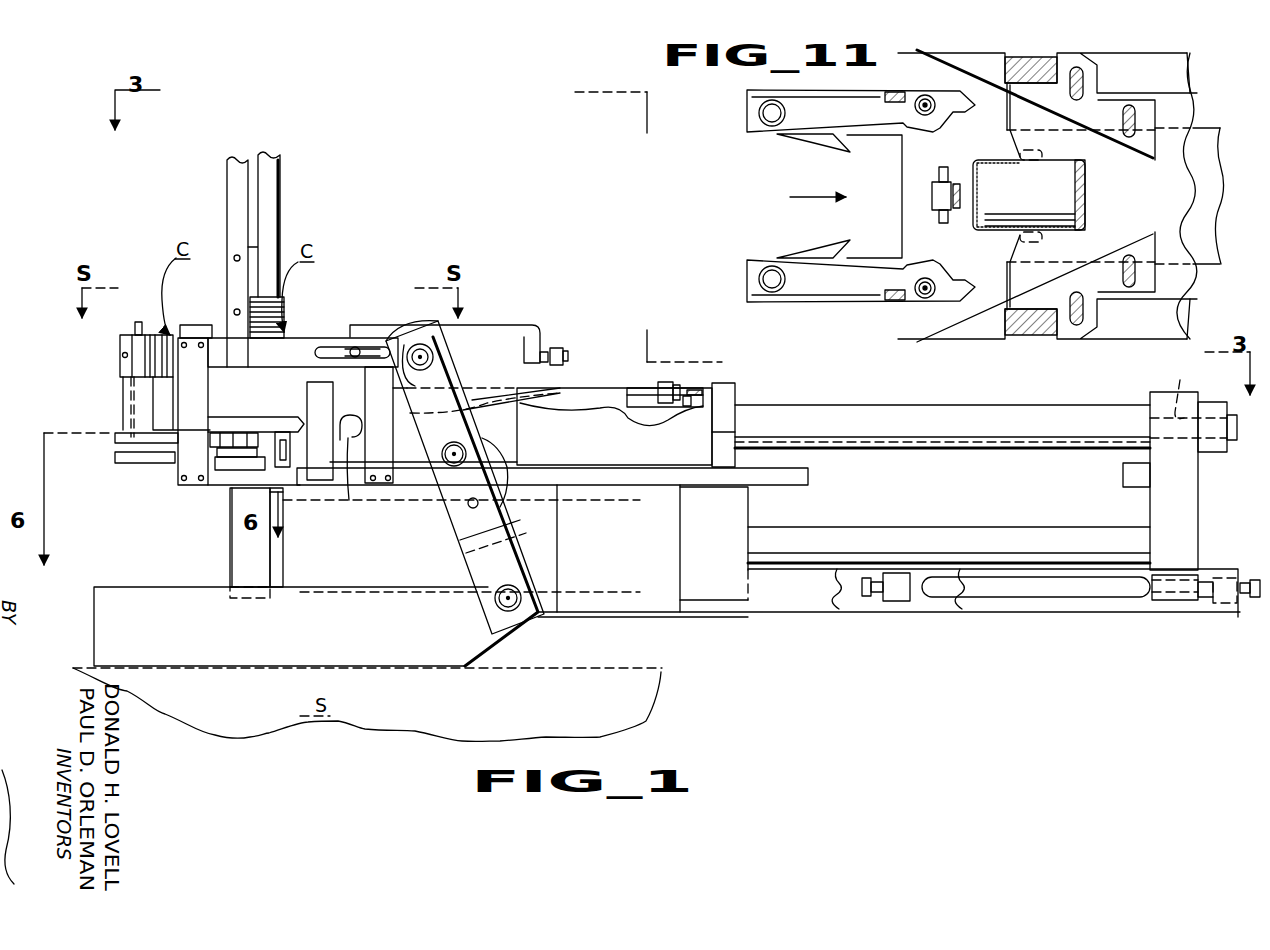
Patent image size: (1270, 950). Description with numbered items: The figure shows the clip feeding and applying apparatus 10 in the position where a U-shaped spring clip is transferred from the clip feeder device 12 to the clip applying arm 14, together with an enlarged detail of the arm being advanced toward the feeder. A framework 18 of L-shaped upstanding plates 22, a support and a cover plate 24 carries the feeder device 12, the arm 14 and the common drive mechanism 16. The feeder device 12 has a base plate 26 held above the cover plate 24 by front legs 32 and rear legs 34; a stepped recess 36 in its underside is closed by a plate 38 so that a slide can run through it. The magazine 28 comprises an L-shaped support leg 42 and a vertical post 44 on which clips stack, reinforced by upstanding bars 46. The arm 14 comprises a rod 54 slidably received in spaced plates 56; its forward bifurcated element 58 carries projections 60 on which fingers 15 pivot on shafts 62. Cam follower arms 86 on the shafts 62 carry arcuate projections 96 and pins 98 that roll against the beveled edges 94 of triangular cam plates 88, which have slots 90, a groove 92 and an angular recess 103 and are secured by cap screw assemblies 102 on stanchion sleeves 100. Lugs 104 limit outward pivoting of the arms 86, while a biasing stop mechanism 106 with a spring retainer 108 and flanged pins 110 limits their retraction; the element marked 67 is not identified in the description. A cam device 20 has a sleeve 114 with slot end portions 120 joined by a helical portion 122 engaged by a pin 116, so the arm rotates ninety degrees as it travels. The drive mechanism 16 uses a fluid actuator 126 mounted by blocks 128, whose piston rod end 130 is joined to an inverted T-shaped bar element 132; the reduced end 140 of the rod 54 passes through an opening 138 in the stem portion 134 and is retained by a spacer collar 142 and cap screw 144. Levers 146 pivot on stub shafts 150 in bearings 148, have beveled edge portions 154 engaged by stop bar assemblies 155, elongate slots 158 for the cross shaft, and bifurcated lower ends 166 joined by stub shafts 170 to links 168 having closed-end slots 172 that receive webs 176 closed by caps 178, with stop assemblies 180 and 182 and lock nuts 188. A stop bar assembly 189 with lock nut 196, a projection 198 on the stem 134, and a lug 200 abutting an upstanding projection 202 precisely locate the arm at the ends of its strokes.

In FIG. 1, the apparatus 10 is at (519, 312).
In FIG. 1, the clip feeder device 12 is at (290, 326).
In FIG. 1, the clip applying arm 14 is at (929, 407).
In FIG. 1, the fingers 15 is at (120, 346).
In FIG. 11, the fingers 15 is at (800, 143).
In FIG. 1, the common drive mechanism 16 is at (902, 556).
In FIG. 1, the framework 18 is at (480, 416).
In FIG. 1, the cam device 20 is at (592, 402).
In FIG. 1, the upstanding plates 22 is at (338, 627).
In FIG. 1, the cover plate 24 is at (630, 486).
In FIG. 1, the base plate 26 is at (290, 361).
In FIG. 11, the base plate 26 is at (1142, 63).
In FIG. 1, the magazine 28 is at (286, 210).
In FIG. 1, the legs 32 is at (197, 382).
In FIG. 11, the legs 32 is at (1020, 60).
In FIG. 1, the legs 34 is at (394, 395).
In FIG. 11, the recess 36 is at (1207, 128).
In FIG. 11, the cover plate 38 is at (1187, 162).
In FIG. 1, the support leg 42 is at (200, 326).
In FIG. 1, the vertical post 44 is at (283, 212).
In FIG. 1, the upstanding bars 46 is at (228, 217).
In FIG. 1, the rod 54 is at (826, 405).
In FIG. 11, the rod 54 is at (1046, 201).
In FIG. 1, the spaced plates 56 is at (316, 395).
In FIG. 1, the bifurcated element 58 is at (210, 427).
In FIG. 11, the bifurcated element 58 is at (978, 128).
In FIG. 1, the projections 60 is at (123, 402).
In FIG. 1, the shaft 62 is at (138, 322).
In FIG. 11, the shaft 62 is at (760, 114).
In FIG. 11, the direction of motion 67 is at (830, 246).
In FIG. 1, the cam follower arms 86 is at (157, 438).
In FIG. 11, the cam follower arms 86 is at (828, 124).
In FIG. 1, the cam plates 88 is at (160, 458).
In FIG. 11, the cam plates 88 is at (1112, 120).
In FIG. 11, the elongate slots 90 is at (1130, 106).
In FIG. 11, the groove 92 is at (1024, 62).
In FIG. 11, the beveled edges 94 is at (1127, 150).
In FIG. 11, the arcuate projection 96 is at (930, 95).
In FIG. 1, the pin 98 is at (212, 455).
In FIG. 11, the pin 98 is at (1021, 157).
In FIG. 1, the stanchion sleeves 100 is at (220, 484).
In FIG. 11, the cap screw assemblies 102 is at (1071, 80).
In FIG. 11, the angular recess 103 is at (1110, 75).
In FIG. 11, the lugs 104 is at (890, 92).
In FIG. 11, the biasing stop mechanism 106 is at (922, 178).
In FIG. 11, the spring retainer 108 is at (940, 197).
In FIG. 11, the flanged pins 110 is at (945, 168).
In FIG. 1, the sleeve 114 is at (626, 451).
In FIG. 1, the pin 116 is at (690, 406).
In FIG. 1, the end portions 120 is at (350, 488).
In FIG. 1, the helical portion 122 is at (520, 393).
In FIG. 1, the fluid actuator 126 is at (624, 560).
In FIG. 1, the blocks 128 is at (229, 528).
In FIG. 1, the piston rod end 130 is at (1002, 555).
In FIG. 1, the bar element 132 is at (1147, 506).
In FIG. 1, the stem portion 134 is at (1188, 480).
In FIG. 1, the opening 138 is at (1181, 380).
In FIG. 1, the reduced end 140 is at (1150, 423).
In FIG. 1, the spacer collar 142 is at (1209, 452).
In FIG. 1, the cap screw 144 is at (1205, 402).
In FIG. 1, the levers 146 is at (498, 512).
In FIG. 1, the bearings 148 is at (500, 488).
In FIG. 1, the stub shaft 150 is at (453, 467).
In FIG. 1, the beveled edge portions 154 is at (407, 338).
In FIG. 1, the stop bar assemblies 155 is at (388, 352).
In FIG. 1, the elongate slot 158 is at (423, 344).
In FIG. 1, the bifurcated lower ends 166 is at (480, 564).
In FIG. 1, the links 168 is at (773, 617).
In FIG. 1, the stub shaft 170 is at (497, 601).
In FIG. 1, the slot 172 is at (1050, 590).
In FIG. 1, the web 176 is at (1155, 587).
In FIG. 1, the cap 178 is at (1170, 600).
In FIG. 1, the stop assembly 180 is at (902, 604).
In FIG. 1, the stop assembly 182 is at (1230, 606).
In FIG. 1, the lock nut 188 is at (876, 598).
In FIG. 1, the stop bar assembly 189 is at (535, 326).
In FIG. 1, the lock nut 196 is at (560, 350).
In FIG. 1, the projection 198 is at (1123, 468).
In FIG. 1, the lug 200 is at (293, 488).
In FIG. 1, the upstanding projection 202 is at (317, 470).